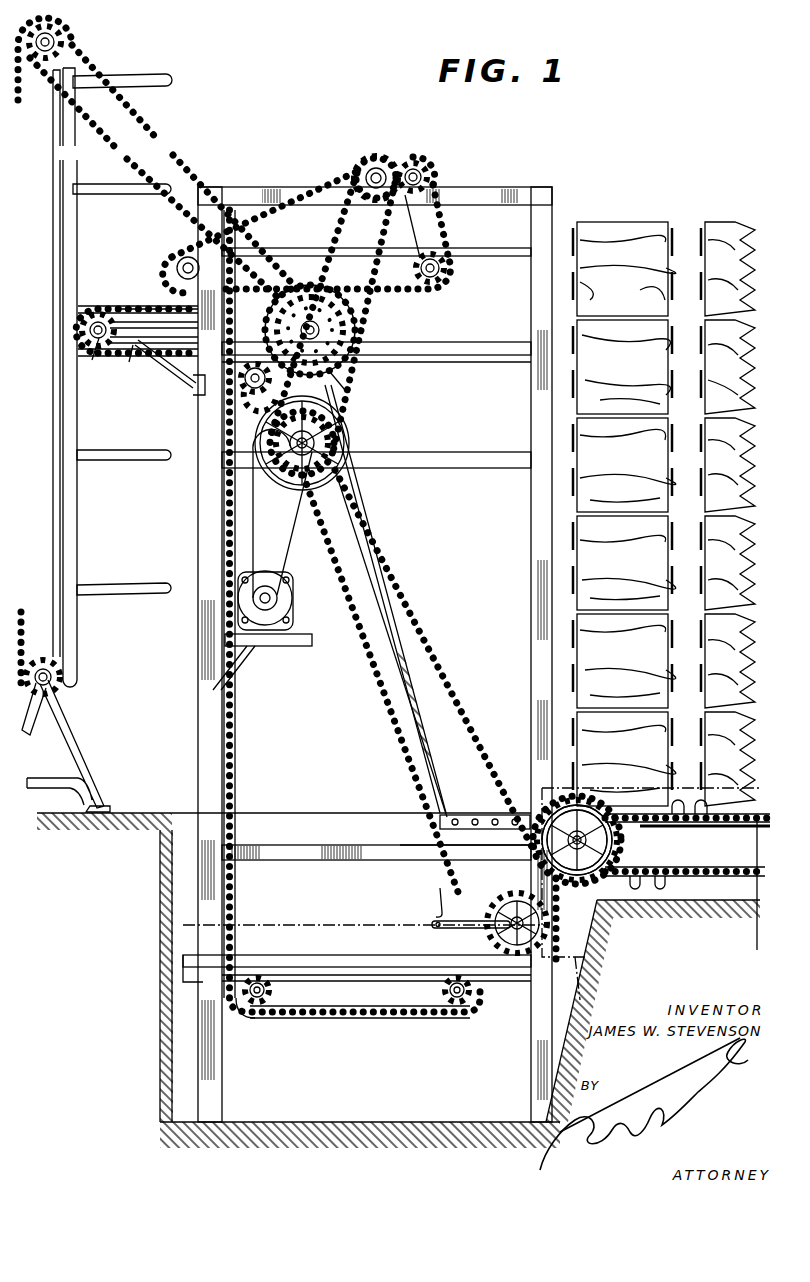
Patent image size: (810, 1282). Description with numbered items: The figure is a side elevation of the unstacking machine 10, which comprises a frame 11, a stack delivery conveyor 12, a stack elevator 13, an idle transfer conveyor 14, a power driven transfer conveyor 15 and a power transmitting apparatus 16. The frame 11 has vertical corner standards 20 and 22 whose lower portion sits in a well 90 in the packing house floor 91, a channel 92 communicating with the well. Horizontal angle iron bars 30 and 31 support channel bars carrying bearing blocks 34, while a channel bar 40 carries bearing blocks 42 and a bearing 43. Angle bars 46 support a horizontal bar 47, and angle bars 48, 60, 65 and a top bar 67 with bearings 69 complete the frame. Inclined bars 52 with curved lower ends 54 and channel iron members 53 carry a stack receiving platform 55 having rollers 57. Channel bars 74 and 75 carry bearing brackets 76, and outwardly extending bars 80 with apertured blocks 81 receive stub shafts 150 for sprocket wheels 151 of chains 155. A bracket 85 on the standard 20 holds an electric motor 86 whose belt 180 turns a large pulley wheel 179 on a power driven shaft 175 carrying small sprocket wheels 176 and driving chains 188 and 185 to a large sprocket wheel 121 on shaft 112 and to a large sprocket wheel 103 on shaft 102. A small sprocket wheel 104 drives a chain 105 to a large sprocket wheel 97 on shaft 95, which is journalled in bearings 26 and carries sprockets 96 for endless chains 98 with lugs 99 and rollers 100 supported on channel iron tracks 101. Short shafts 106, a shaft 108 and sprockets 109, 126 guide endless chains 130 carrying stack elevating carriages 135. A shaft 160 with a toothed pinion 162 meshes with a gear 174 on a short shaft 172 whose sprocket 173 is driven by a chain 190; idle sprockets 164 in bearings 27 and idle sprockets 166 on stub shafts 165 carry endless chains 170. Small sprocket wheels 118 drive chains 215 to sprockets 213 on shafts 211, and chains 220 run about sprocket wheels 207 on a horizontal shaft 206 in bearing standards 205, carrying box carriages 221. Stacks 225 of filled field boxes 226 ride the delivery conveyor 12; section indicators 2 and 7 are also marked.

The section line 2 is at (378, 14).
The section line 7 is at (183, 922).
The unstacking machine 10 is at (574, 172).
The frame 11 is at (528, 540).
The stack delivery conveyor 12 is at (714, 880).
The stack elevator 13 is at (418, 1018).
The idle transfer conveyor 14 is at (124, 305).
The power driven transfer conveyor 15 is at (448, 226).
The power transmitting apparatus 16 is at (357, 471).
The vertical corner standard 20 is at (198, 688).
The vertical corner standard 22 is at (531, 678).
The bearing 26 is at (586, 880).
The bearing 27 is at (176, 268).
The horizontal angle iron bar 30 is at (198, 988).
The bar 31 is at (548, 996).
The bearing block 34 is at (268, 990).
The channel bar 40 is at (334, 962).
The bearing block 42 is at (443, 992).
The bearing 43 is at (470, 977).
The horizontal angle bar 46 is at (286, 846).
The horizontal bar 47 is at (445, 847).
The angle bar 48 is at (460, 454).
The inclined bar 52 is at (420, 736).
The channel iron member 53 is at (432, 772).
The curved lower end 54 is at (438, 898).
The stack receiving platform 55 is at (468, 812).
The roller 57 is at (503, 792).
The angle bar 60 is at (490, 344).
The angle bar 65 is at (502, 256).
The horizontal angle iron bar 67 is at (509, 187).
The bearing 69 is at (409, 226).
The upper horizontal channel bar 74 is at (154, 333).
The lower horizontal channel bar 75 is at (190, 389).
The bearing bracket 76 is at (255, 364).
The outwardly extending bar 80 is at (128, 365).
The apertured block 81 is at (93, 362).
The horizontal bracket 85 is at (296, 647).
The electric motor 86 is at (292, 606).
The well 90 is at (178, 1054).
The packing house floor 91 is at (156, 813).
The channel 92 is at (742, 906).
The shaft 95 is at (598, 818).
The sprocket 96 is at (606, 852).
The large sprocket wheel 97 is at (600, 838).
The endless chain 98 is at (715, 877).
The lug 99 is at (677, 814).
The roller 100 is at (703, 806).
The channel iron track 101 is at (722, 827).
The shaft 102 is at (455, 928).
The large sprocket wheel 103 is at (505, 894).
The small sprocket wheel 104 is at (517, 900).
The chain 105 is at (653, 1011).
The short shaft 106 is at (457, 984).
The shaft 108 is at (259, 985).
The sprocket 109 is at (250, 1014).
The shaft 112 is at (345, 320).
The small sprocket wheel 118 is at (322, 330).
The large sprocket wheel 121 is at (352, 346).
The sprocket 126 is at (243, 396).
The endless chain 130 is at (237, 742).
The stack elevating carriage 135 is at (392, 368).
The stub shaft 150 is at (98, 322).
The sprocket wheel 151 is at (110, 312).
The endless chain 155 is at (163, 308).
The shaft 160 is at (418, 165).
The toothed pinion 162 is at (436, 173).
The idle sprocket 164 is at (185, 258).
The stub shaft 165 is at (445, 273).
The idle sprocket 166 is at (425, 292).
The endless chain 170 is at (284, 205).
The short shaft 172 is at (377, 168).
The sprocket 173 is at (350, 197).
The gear 174 is at (360, 160).
The power driven shaft 175 is at (300, 457).
The small sprocket wheel 176 is at (330, 431).
The large pulley wheel 179 is at (346, 441).
The endless belt 180 is at (254, 557).
The endless chain 185 is at (386, 705).
The endless chain 188 is at (350, 380).
The chain 190 is at (330, 214).
The bearing standard 205 is at (80, 766).
The horizontal shaft 206 is at (52, 677).
The sprocket wheel 207 is at (60, 668).
The shaft 211 is at (56, 34).
The sprocket 213 is at (58, 45).
The chain 215 is at (150, 124).
The chain 220 is at (30, 609).
The box carriage 221 is at (143, 77).
The stack 225 is at (576, 499).
The filled field box 226 is at (728, 222).